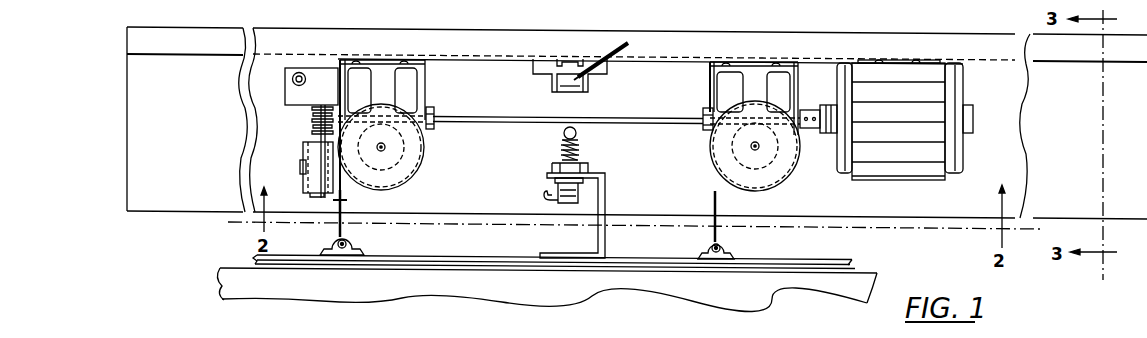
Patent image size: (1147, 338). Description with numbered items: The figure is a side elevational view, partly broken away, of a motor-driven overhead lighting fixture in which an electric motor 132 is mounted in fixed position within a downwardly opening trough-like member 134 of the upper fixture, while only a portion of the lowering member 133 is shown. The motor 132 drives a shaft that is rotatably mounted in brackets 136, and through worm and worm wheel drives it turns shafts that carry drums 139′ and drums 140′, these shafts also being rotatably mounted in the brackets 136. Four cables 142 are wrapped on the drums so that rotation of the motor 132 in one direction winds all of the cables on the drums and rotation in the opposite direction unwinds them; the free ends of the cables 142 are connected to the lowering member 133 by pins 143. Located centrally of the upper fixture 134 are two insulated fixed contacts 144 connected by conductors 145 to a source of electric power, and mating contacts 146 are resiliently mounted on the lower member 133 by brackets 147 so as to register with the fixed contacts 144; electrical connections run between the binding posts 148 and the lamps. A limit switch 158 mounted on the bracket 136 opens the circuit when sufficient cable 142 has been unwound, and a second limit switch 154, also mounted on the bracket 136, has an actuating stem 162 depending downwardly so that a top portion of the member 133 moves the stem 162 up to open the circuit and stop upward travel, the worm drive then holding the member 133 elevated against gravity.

The electric motor 132 is at (905, 120).
The lowering member 133 is at (245, 288).
The trough-like member 134 is at (183, 203).
The brackets 136 is at (427, 88).
The drums 139′ is at (421, 157).
The drums 140′ is at (788, 173).
The cables 142 is at (343, 202).
The pins 143 is at (350, 242).
The fixed contacts 144 is at (580, 92).
The conductors 145 is at (612, 57).
The mating contacts 146 is at (562, 135).
The brackets 147 is at (605, 195).
The binding posts 148 is at (543, 198).
The limit switch 154 is at (283, 97).
The limit switch 158 is at (303, 182).
The actuating stem 162 is at (312, 144).